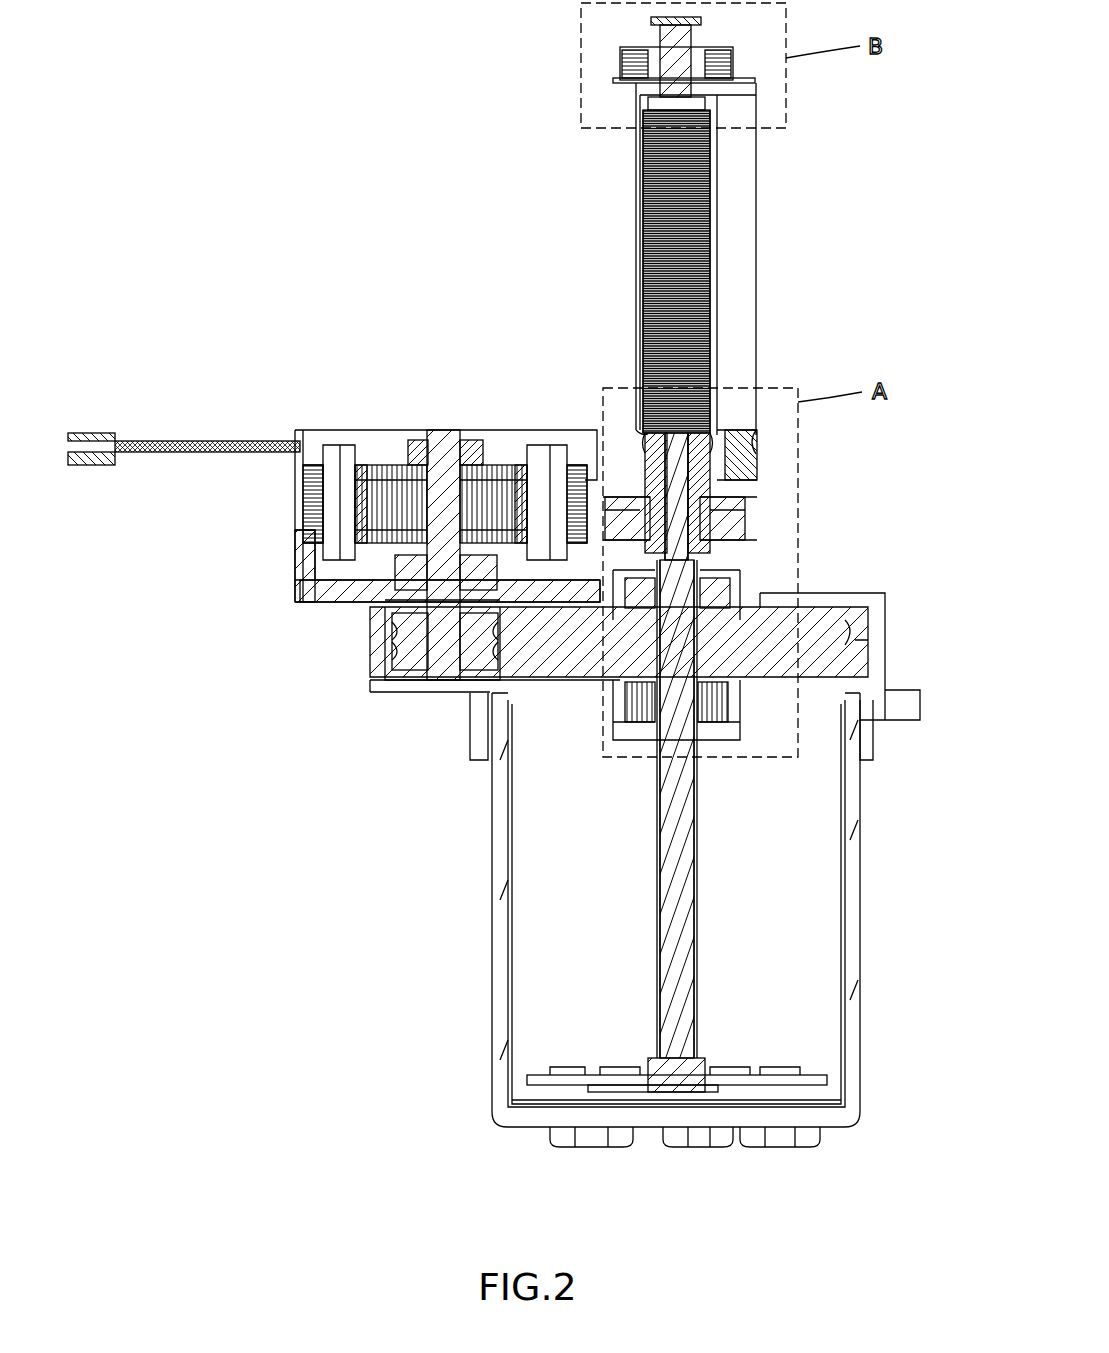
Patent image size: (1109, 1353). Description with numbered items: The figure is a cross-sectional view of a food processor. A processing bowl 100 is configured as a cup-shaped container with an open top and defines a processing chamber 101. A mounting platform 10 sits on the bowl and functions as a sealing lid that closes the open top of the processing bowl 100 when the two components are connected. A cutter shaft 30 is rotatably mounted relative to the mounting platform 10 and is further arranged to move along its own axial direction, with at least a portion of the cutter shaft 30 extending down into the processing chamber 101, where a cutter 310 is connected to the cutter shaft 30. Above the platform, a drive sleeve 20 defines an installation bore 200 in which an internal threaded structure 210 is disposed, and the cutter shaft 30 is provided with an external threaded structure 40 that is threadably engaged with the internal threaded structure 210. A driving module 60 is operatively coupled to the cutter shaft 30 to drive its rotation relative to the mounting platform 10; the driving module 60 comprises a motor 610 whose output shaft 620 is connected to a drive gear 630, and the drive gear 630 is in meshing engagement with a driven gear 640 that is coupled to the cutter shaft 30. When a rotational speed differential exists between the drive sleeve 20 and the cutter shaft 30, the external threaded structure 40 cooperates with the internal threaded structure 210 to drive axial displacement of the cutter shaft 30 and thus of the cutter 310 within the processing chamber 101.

The mounting platform 10 is at (885, 633).
The drive sleeve 20 is at (713, 215).
The installation bore 200 is at (710, 245).
The internal threaded structure 210 is at (710, 275).
The cutter shaft 30 is at (690, 975).
The cutter 310 is at (812, 1086).
The external threaded structure 40 is at (713, 497).
The driving module 60 is at (400, 545).
The motor 610 is at (430, 600).
The output shaft 620 is at (442, 637).
The drive gear 630 is at (478, 652).
The driven gear 640 is at (528, 663).
The processing bowl 100 is at (848, 863).
The processing chamber 101 is at (822, 910).